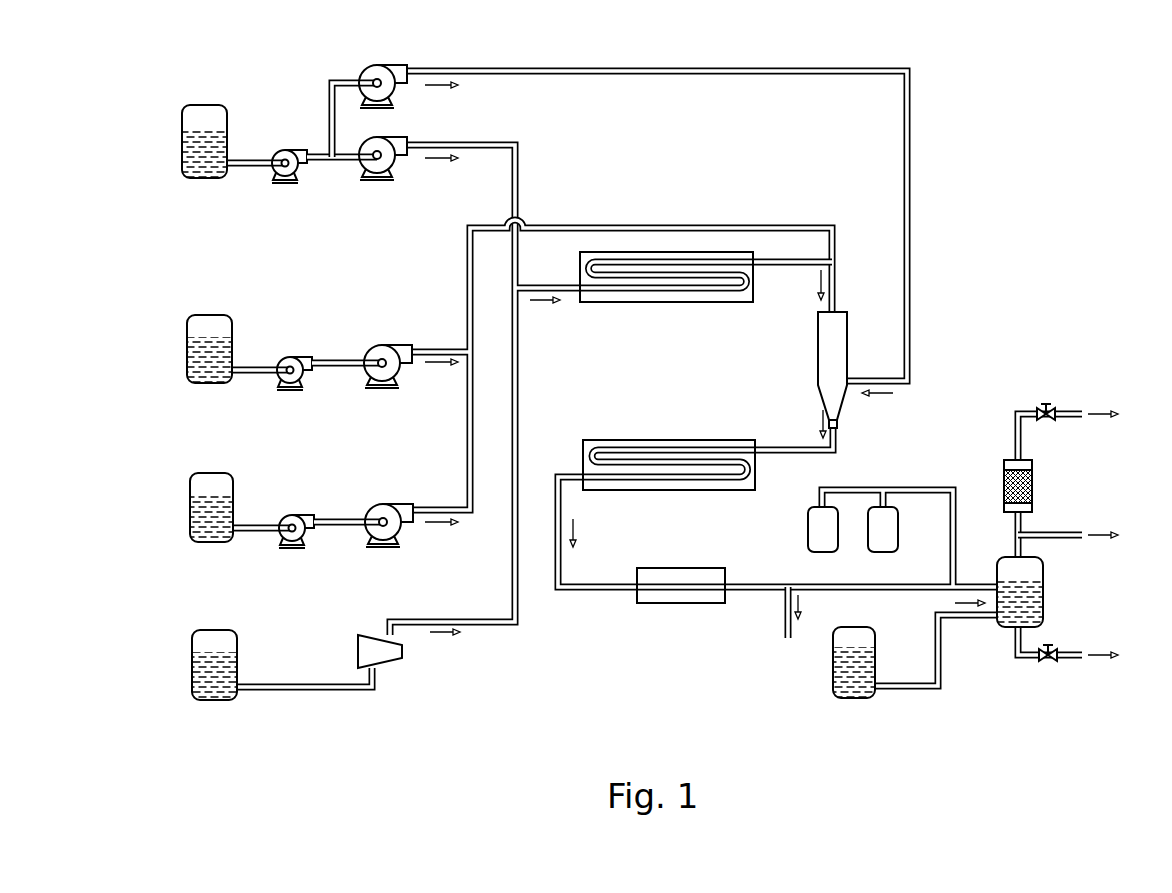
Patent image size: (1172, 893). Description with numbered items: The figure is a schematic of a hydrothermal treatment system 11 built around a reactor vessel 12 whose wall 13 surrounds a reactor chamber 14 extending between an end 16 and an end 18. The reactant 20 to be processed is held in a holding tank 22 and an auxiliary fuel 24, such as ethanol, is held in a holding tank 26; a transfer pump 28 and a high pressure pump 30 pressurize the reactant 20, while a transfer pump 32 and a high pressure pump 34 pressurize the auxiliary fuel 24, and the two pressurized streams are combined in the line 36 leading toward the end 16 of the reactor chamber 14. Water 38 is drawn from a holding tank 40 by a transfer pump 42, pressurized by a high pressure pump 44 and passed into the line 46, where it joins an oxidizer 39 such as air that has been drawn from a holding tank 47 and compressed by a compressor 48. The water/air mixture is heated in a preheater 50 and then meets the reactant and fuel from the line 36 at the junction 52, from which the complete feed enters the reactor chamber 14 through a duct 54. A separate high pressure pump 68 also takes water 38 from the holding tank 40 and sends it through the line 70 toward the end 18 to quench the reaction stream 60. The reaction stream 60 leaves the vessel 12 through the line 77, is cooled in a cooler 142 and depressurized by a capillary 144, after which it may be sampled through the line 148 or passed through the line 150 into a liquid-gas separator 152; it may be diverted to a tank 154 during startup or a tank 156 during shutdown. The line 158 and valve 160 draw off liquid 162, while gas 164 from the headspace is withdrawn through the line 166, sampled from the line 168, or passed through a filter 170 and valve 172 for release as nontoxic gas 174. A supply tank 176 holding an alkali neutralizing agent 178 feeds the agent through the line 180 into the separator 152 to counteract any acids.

The hydrothermal treatment system 11 is at (1032, 246).
The reactor vessel 12 is at (850, 361).
The wall 13 is at (818, 349).
The reactor chamber 14 is at (832, 337).
The end 16 is at (826, 312).
The end 18 is at (823, 399).
The reactant 20 is at (212, 528).
The holding tank 22 is at (190, 498).
The auxiliary fuel 24 is at (210, 368).
The holding tank 26 is at (187, 339).
The transfer pump 28 is at (284, 518).
The high pressure pump 30 is at (398, 505).
The transfer pump 32 is at (281, 358).
The high pressure pump 34 is at (395, 346).
The line 36 is at (466, 252).
The water 38 is at (207, 162).
The oxidizer 39 is at (212, 688).
The holding tank 40 is at (182, 131).
The transfer pump 42 is at (280, 152).
The high pressure pump 44 is at (393, 138).
The line 46 is at (520, 381).
The holding tank 47 is at (192, 653).
The compressor 48 is at (357, 649).
The preheater 50 is at (664, 302).
The junction 52 is at (836, 263).
The duct 54 is at (836, 281).
The reaction stream 60 is at (842, 398).
The high pressure pump 68 is at (390, 66).
The line 70 is at (912, 183).
The line 77 is at (768, 454).
The cooler 142 is at (674, 440).
The capillary 144 is at (684, 568).
The line 148 is at (782, 598).
The line 150 is at (795, 582).
The liquid-gas separator 152 is at (1045, 596).
The tank 154 is at (898, 541).
The tank 156 is at (808, 525).
The line 158 is at (1016, 651).
The valve 160 is at (1049, 662).
The liquid 162 is at (1024, 600).
The gas 164 is at (1040, 568).
The line 166 is at (1015, 549).
The line 168 is at (1068, 533).
The filter 170 is at (1004, 477).
The valve 172 is at (1046, 405).
The nontoxic gas 174 is at (1067, 419).
The supply tank 176 is at (833, 648).
The alkali neutralizing agent 178 is at (855, 690).
The line 180 is at (939, 668).